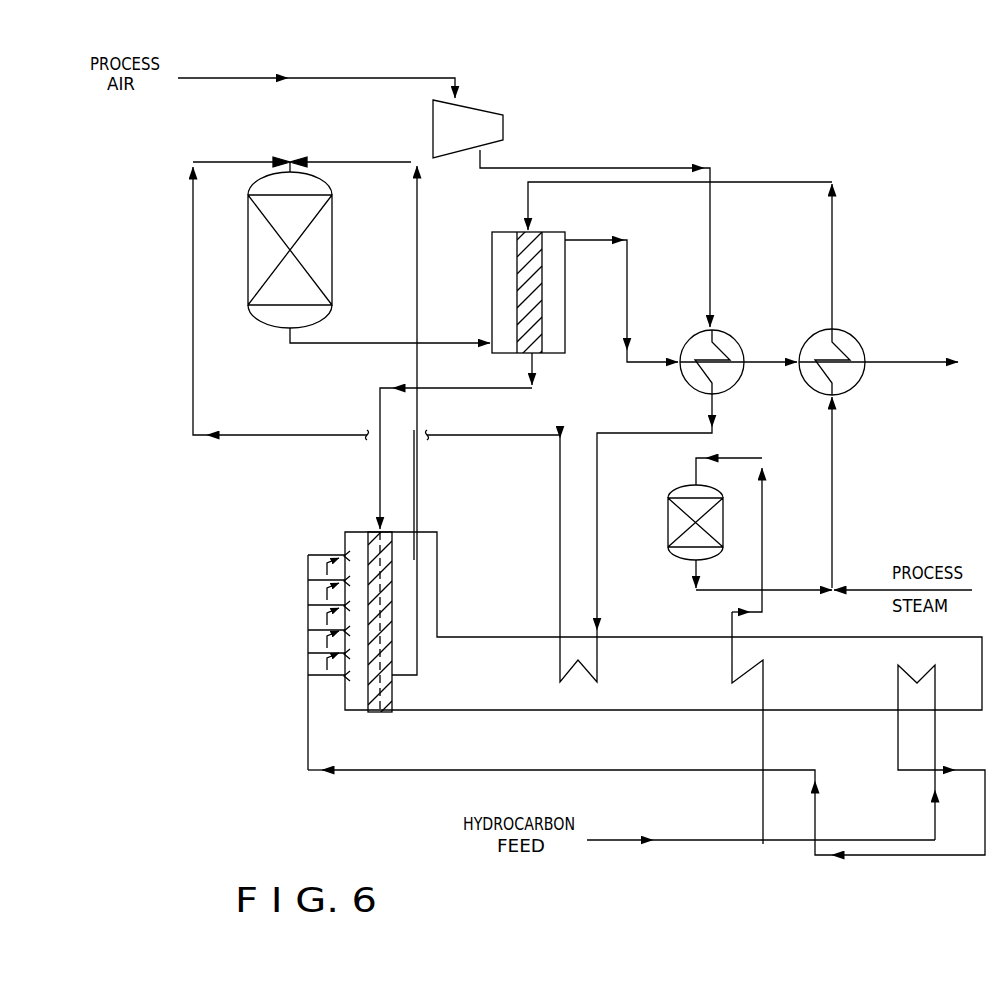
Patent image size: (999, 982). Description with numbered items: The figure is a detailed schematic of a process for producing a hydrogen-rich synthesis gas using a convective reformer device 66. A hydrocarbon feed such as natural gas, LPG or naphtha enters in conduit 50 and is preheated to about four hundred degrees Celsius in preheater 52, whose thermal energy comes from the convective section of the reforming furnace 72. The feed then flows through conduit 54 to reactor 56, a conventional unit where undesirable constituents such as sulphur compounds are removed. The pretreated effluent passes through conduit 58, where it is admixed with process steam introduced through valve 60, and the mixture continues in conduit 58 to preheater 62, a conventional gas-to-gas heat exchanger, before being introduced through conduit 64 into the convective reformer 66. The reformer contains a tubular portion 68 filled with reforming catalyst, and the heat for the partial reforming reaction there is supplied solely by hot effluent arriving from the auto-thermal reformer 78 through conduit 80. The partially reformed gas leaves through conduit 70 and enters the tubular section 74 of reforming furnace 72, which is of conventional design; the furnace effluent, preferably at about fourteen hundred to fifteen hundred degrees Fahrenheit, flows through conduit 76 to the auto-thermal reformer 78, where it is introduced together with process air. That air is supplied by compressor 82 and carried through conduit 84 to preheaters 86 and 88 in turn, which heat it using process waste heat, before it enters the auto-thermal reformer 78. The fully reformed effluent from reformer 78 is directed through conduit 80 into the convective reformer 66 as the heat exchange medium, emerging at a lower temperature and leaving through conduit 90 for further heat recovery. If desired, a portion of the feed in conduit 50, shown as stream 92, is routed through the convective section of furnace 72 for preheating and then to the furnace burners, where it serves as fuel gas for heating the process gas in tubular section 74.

The conduit 50 is at (765, 735).
The preheater 52 is at (731, 659).
The conduit 54 is at (763, 510).
The reactor 56 is at (667, 516).
The conduit 58 is at (832, 484).
The valve 60 is at (835, 588).
The preheater 62 is at (850, 335).
The conduit 64 is at (833, 252).
The convective reformer device 66 is at (488, 265).
The tubular portion 68 is at (517, 292).
The conduit 70 is at (455, 388).
The reforming furnace 72 is at (437, 540).
The tubular section 74 is at (363, 545).
The conduit 76 is at (414, 487).
The auto-thermal reformer 78 is at (333, 236).
The conduit 80 is at (347, 343).
The compressor 82 is at (487, 106).
The conduit 84 is at (627, 168).
The preheater 86 is at (728, 330).
The preheater 88 is at (597, 655).
The conduit 90 is at (627, 290).
The stream 92 is at (377, 770).